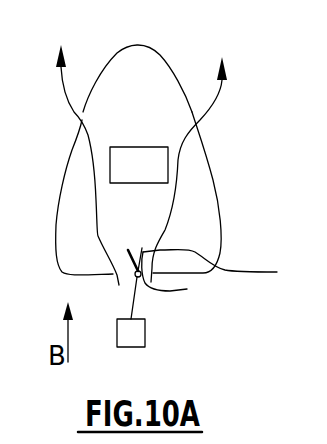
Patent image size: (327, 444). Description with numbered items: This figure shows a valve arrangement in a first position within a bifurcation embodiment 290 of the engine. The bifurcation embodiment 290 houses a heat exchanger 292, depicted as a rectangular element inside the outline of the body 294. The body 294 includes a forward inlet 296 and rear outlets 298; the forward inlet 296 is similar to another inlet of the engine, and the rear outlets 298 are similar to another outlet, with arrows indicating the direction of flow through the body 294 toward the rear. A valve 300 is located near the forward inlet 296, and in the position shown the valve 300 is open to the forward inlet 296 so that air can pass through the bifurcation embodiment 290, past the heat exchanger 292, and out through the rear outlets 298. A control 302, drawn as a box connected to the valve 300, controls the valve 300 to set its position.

The bifurcation embodiment 290 is at (236, 224).
The heat exchanger 292 is at (132, 160).
The body 294 is at (61, 190).
The forward inlet 296 is at (184, 277).
The rear outlets 298 is at (82, 120).
The valve 300 is at (229, 269).
The control 302 is at (145, 334).